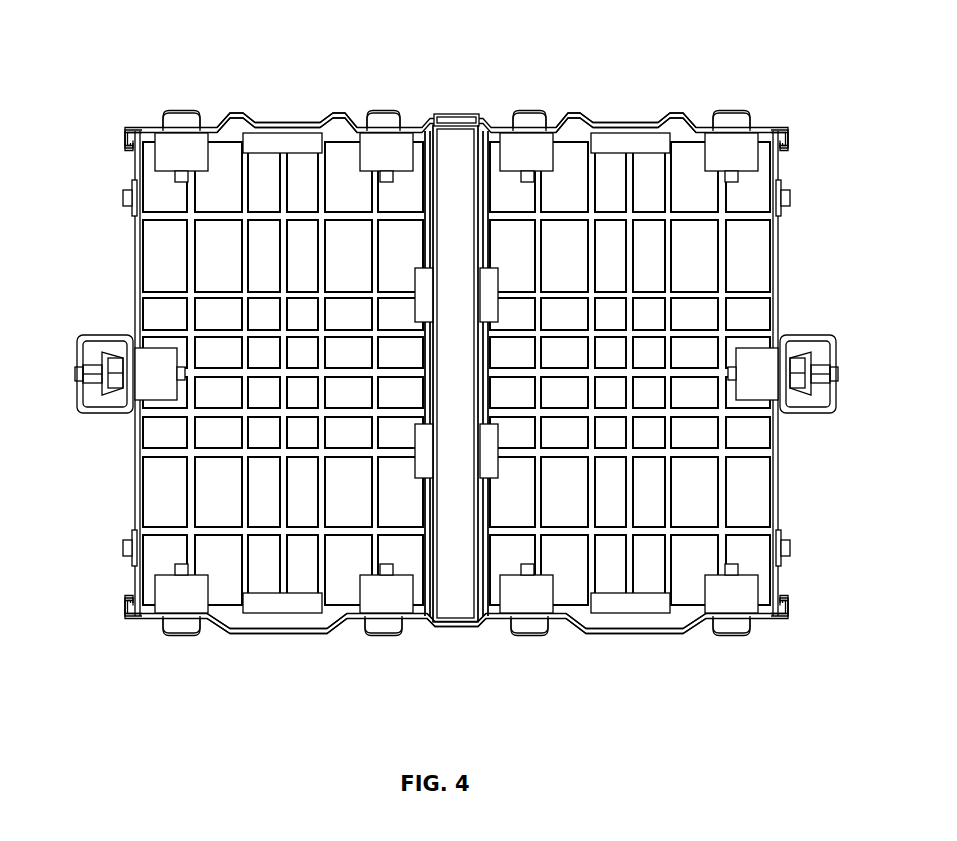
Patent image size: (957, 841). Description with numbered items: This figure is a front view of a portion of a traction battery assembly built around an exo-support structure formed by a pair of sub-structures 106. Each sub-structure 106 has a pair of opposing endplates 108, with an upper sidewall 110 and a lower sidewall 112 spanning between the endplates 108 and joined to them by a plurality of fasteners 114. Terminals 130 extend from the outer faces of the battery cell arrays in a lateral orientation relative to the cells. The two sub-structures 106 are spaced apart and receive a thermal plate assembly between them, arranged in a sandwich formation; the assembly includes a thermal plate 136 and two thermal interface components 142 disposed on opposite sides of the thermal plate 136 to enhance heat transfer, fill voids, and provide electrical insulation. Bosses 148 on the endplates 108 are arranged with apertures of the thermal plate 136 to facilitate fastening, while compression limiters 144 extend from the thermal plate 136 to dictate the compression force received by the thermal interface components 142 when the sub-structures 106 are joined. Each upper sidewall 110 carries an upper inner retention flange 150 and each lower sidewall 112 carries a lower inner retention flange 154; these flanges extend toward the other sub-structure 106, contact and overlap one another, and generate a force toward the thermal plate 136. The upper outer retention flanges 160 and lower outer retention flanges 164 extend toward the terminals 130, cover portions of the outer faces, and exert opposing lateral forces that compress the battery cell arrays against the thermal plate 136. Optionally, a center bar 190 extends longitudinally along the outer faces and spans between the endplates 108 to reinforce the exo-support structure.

The sub-structure 106 is at (180, 110).
The endplate 108 is at (205, 275).
The upper sidewall 110 is at (240, 122).
The lower sidewall 112 is at (300, 632).
The fastener 114 is at (170, 153).
The terminal 130 is at (126, 197).
The thermal plate 136 is at (456, 605).
The thermal interface component 142 is at (425, 296).
The compression limiter 144 is at (432, 160).
The boss 148 is at (432, 360).
The upper inner retention flange 150 is at (440, 116).
The lower inner retention flange 154 is at (440, 624).
The upper outer retention flange 160 is at (127, 138).
The lower outer retention flange 164 is at (127, 608).
The center bar 190 is at (90, 338).